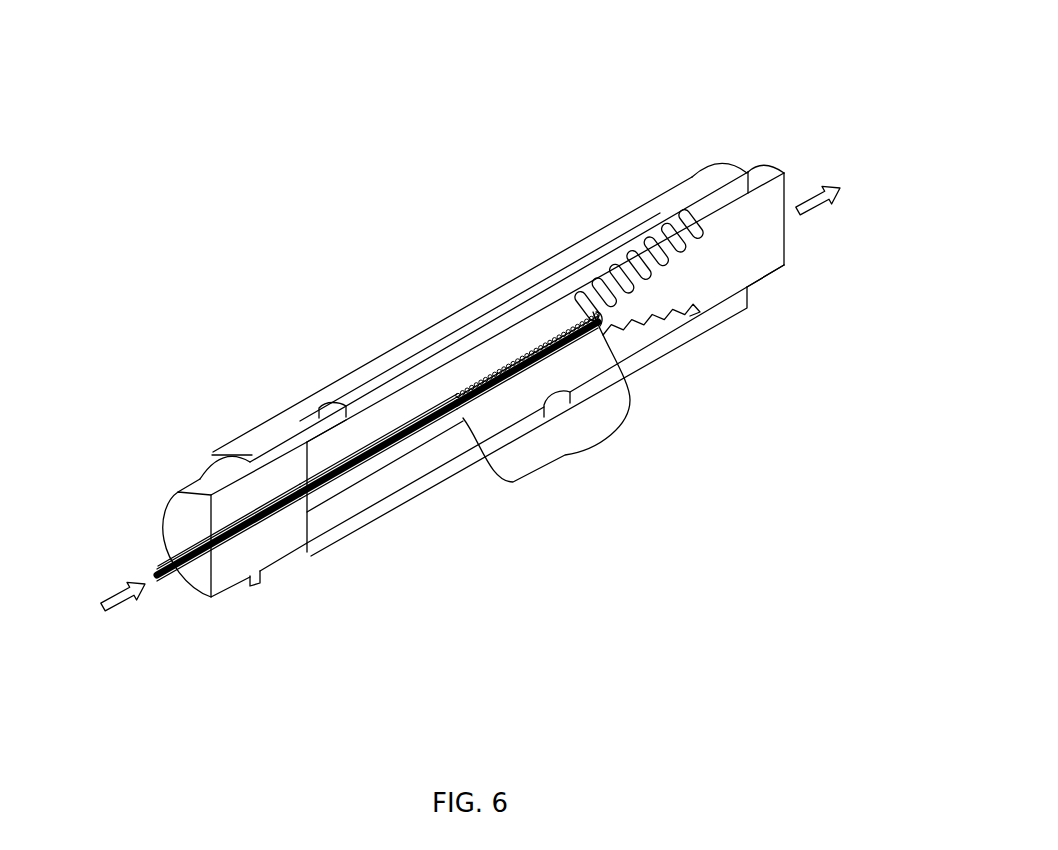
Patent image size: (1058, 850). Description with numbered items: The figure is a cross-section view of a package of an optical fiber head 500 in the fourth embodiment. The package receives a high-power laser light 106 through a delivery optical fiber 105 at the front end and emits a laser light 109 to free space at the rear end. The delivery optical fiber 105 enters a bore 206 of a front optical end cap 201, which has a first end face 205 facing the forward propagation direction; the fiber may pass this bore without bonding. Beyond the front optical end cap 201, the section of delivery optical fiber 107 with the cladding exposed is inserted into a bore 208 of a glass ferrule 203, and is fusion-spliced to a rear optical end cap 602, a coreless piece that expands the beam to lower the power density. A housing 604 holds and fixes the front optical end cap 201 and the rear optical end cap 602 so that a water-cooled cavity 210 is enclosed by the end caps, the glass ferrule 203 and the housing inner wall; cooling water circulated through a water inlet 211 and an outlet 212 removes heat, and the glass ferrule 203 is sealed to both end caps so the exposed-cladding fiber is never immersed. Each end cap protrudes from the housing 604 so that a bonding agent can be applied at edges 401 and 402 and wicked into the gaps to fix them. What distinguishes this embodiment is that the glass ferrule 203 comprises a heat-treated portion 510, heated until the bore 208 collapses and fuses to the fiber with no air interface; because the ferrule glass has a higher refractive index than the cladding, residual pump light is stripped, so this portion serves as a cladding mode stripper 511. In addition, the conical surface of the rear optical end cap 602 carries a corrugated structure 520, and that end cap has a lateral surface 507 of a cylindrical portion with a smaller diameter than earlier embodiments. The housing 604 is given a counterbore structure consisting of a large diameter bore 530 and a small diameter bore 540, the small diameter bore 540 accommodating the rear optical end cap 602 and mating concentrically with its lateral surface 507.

The package of an optical fiber head 500 is at (503, 190).
The edge 402 is at (755, 170).
The small diameter bore 540 is at (723, 205).
The lateral surface of a cylindrical portion 507 is at (770, 175).
The corrugated structure 520 is at (652, 255).
The housing 604 is at (567, 268).
The large diameter bore 530 is at (475, 342).
The notch 212 is at (550, 388).
The glass ferrule 203 is at (410, 418).
The water inlet 211 is at (327, 403).
The section of delivery optical fiber with the cladding exposed 107 is at (377, 440).
The edge 401 is at (235, 457).
The water-cooled cavity 210 is at (322, 450).
The delivery optical fiber 105 is at (168, 562).
The high-power laser light 106 is at (113, 590).
The laser light 109 is at (827, 207).
The rear optical end cap 602 is at (735, 262).
The heat-treated portion 510 is at (565, 455).
The cladding mode stripper 511 is at (651, 319).
The bore 208 is at (440, 420).
The first end face 205 is at (258, 527).
The bore 206 is at (307, 518).
The front optical end cap 201 is at (262, 545).